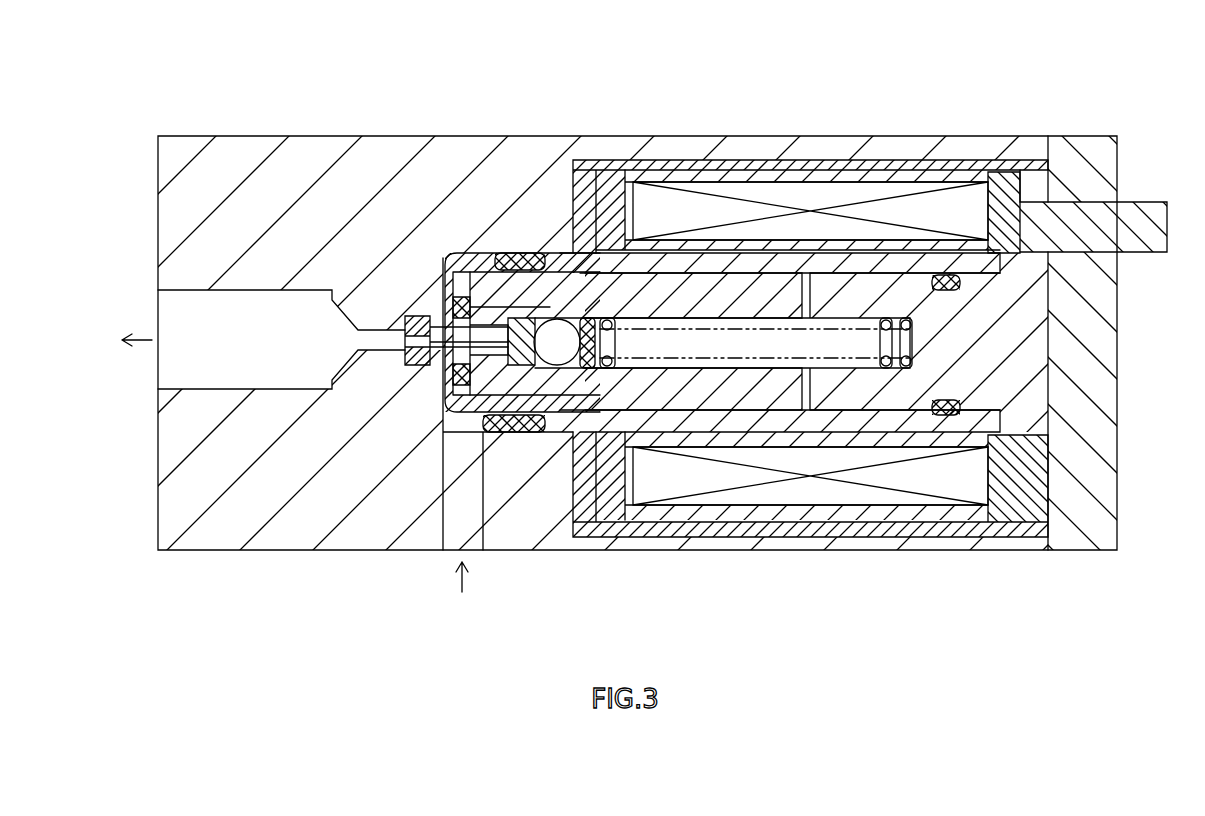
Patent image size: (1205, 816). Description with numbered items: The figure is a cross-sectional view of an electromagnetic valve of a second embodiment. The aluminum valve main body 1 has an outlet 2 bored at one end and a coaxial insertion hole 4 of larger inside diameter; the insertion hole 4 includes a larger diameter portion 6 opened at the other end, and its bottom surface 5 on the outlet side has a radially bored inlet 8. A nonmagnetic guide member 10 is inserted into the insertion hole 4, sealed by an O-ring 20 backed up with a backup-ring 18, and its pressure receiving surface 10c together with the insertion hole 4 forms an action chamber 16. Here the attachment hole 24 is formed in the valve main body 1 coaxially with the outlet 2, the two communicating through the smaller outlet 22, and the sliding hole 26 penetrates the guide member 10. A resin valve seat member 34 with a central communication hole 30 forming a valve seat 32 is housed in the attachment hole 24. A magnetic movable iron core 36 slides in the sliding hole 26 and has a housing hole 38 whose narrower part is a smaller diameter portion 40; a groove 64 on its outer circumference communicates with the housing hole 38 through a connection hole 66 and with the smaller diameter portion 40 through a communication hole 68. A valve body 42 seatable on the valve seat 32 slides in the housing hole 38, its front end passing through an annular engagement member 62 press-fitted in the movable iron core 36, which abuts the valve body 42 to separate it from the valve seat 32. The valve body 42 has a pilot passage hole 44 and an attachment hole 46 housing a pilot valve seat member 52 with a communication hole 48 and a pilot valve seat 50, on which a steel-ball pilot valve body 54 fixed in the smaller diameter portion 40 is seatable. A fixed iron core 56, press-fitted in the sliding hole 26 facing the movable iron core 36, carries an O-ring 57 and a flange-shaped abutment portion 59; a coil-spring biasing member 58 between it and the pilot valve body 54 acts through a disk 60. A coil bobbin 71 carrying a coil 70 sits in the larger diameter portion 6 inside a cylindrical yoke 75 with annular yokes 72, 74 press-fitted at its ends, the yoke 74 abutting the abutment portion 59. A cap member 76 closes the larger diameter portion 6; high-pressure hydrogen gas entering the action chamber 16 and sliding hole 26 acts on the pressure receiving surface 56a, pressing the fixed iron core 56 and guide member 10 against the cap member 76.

The valve main body 1 is at (246, 192).
The outlet 2 is at (165, 297).
The insertion hole 4 is at (452, 258).
The bottom surface 5 is at (446, 470).
The larger diameter portion 6 is at (600, 180).
The inlet 8 is at (466, 425).
The guide member 10 is at (806, 300).
The pressure receiving surface 10c is at (486, 440).
The action chamber 16 is at (450, 272).
The backup-ring 18 is at (540, 274).
The O-ring 20 is at (505, 425).
The smaller outlet 22 is at (345, 330).
The attachment hole 24 is at (407, 352).
The sliding hole 26 is at (752, 470).
The communication hole 30 is at (410, 318).
The valve seat 32 is at (438, 360).
The valve seat member 34 is at (447, 298).
The movable iron core 36 is at (700, 262).
The housing hole 38 is at (517, 400).
The smaller diameter portion 40 is at (886, 395).
The valve body 42 is at (490, 258).
The pilot passage hole 44 is at (476, 300).
The attachment hole 46 is at (523, 368).
The communication hole 48 is at (517, 256).
The pilot valve seat 50 is at (566, 364).
The pilot valve seat member 52 is at (570, 262).
The pilot valve body 54 is at (625, 440).
The fixed iron core 56 is at (905, 425).
The pressure receiving surface 56a is at (808, 356).
The O-ring 57 is at (1003, 262).
The biasing member 58 is at (888, 318).
The abutment portion 59 is at (1002, 240).
The disk 60 is at (588, 210).
The engagement member 62 is at (457, 416).
The groove 64 is at (785, 415).
The connection hole 66 is at (549, 382).
The communication hole 68 is at (690, 445).
The coil 70 is at (888, 200).
The coil bobbin 71 is at (963, 450).
The annular yoke 72 is at (592, 372).
The annular yoke 74 is at (1040, 495).
The cylindrical yoke 75 is at (1027, 500).
The cap member 76 is at (1093, 467).